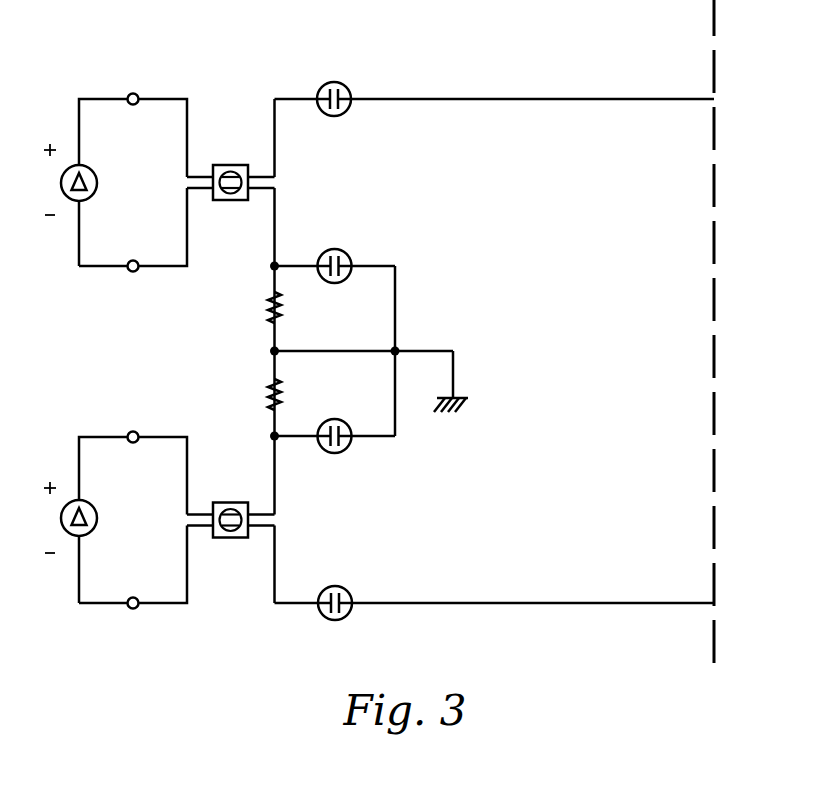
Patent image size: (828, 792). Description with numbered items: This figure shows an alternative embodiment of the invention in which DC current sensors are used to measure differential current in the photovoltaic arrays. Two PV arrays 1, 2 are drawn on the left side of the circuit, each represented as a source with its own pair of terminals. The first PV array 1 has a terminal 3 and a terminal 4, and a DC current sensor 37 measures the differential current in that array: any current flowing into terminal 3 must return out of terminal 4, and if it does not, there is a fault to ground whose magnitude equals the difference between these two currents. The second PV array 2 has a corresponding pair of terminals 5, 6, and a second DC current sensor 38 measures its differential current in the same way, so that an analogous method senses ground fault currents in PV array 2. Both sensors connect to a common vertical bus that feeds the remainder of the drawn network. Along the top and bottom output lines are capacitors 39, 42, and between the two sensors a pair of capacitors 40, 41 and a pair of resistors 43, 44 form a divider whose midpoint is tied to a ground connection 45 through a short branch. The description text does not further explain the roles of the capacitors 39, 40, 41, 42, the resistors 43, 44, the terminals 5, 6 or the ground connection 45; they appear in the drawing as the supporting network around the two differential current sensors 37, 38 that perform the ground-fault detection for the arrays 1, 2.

The PV array 1 is at (70, 179).
The PV array 2 is at (70, 517).
The terminal 3 is at (133, 84).
The terminal 4 is at (133, 251).
The second source positive terminal 5 is at (133, 422).
The second source negative terminal 6 is at (133, 588).
The DC current sensor 37 is at (230, 168).
The DC current sensor 38 is at (230, 506).
The first capacitor 39 is at (334, 84).
The second capacitor 40 is at (335, 250).
The third capacitor 41 is at (335, 452).
The fourth capacitor 42 is at (335, 621).
The first resistor 43 is at (257, 307).
The second resistor 44 is at (257, 394).
The ground connection 45 is at (451, 399).